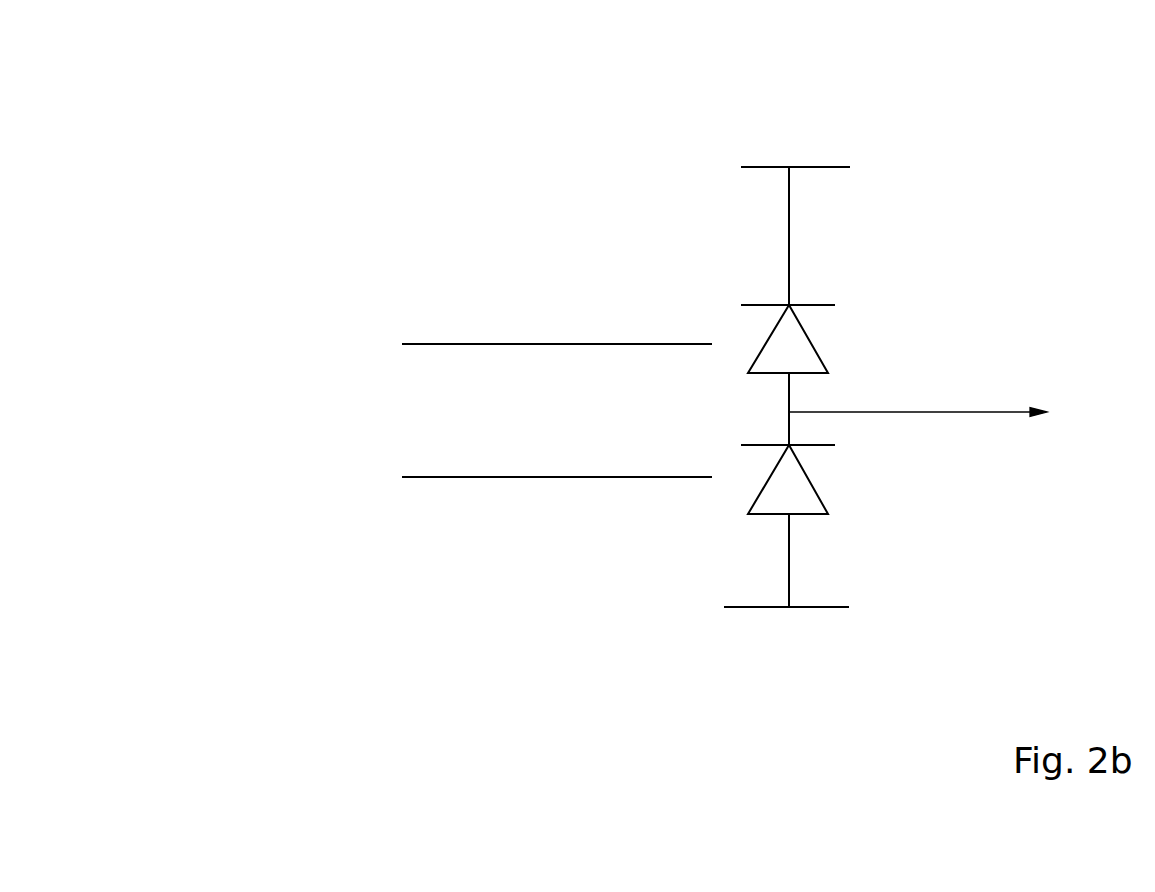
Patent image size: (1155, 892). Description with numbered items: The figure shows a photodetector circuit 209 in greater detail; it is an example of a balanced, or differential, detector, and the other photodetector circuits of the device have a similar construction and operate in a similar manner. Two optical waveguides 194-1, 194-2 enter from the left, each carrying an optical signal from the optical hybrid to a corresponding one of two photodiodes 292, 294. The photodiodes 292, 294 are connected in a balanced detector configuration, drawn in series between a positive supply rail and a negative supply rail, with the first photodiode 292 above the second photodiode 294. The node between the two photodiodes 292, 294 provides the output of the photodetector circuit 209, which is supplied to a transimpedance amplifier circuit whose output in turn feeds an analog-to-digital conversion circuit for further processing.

The photodetector circuit 209 is at (429, 105).
The optical waveguide 194-1 is at (557, 344).
The optical waveguide 194-2 is at (557, 477).
The photodiode 292 is at (737, 327).
The photodiode 294 is at (743, 537).